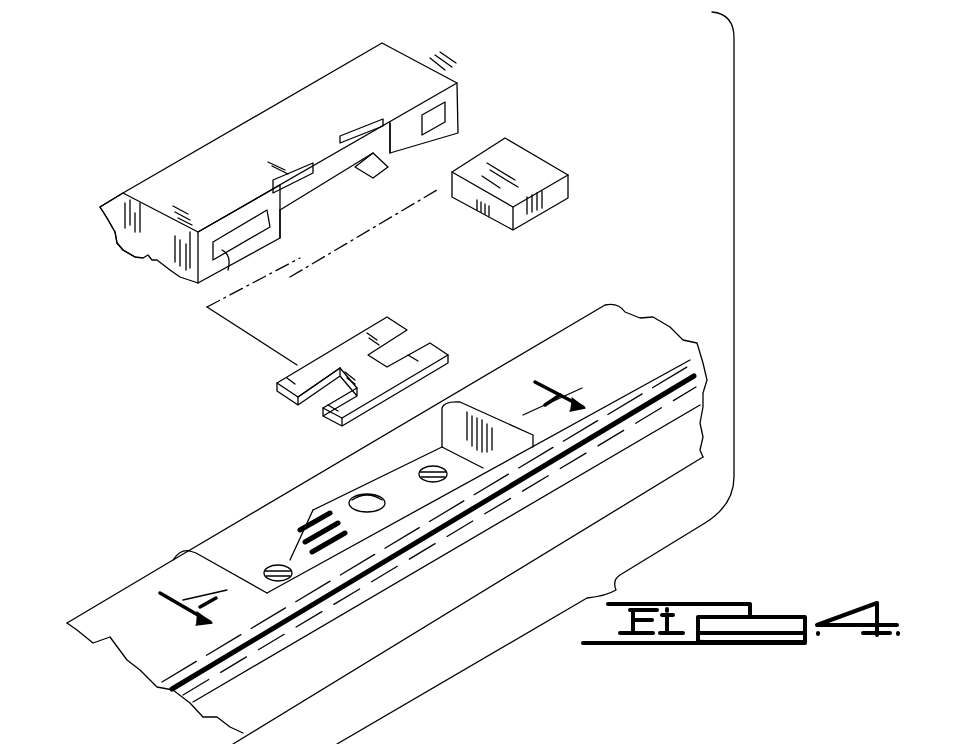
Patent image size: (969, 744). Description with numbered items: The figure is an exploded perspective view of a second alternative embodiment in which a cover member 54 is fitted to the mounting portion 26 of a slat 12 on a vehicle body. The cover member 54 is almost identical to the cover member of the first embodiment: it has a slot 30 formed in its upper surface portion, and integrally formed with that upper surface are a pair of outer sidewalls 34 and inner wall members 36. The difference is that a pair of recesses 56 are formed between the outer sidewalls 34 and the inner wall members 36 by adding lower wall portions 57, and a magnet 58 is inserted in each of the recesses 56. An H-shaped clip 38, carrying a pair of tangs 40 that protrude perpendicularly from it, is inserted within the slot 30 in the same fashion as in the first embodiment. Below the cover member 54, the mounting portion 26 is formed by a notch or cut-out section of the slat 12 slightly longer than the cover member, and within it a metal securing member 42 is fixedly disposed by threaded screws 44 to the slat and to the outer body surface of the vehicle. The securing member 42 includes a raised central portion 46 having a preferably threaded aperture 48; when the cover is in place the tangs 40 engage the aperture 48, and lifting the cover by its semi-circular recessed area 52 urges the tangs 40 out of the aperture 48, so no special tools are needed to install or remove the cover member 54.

The slat 12 is at (90, 613).
The mounting portion 26 is at (215, 548).
The slot 30 is at (368, 168).
The outer sidewalls 34 is at (455, 100).
The inner wall members 36 is at (285, 222).
The clip 38 is at (414, 322).
The tangs 40 is at (318, 393).
The securing member 42 is at (300, 507).
The threaded screws 44 is at (278, 565).
The raised central portion 46 is at (320, 500).
The aperture 48 is at (365, 497).
The semi-circular recessed area 52 is at (100, 215).
The cover member 54 is at (255, 105).
The recesses 56 is at (397, 135).
The lower wall portions 57 is at (420, 150).
The magnet 58 is at (540, 170).